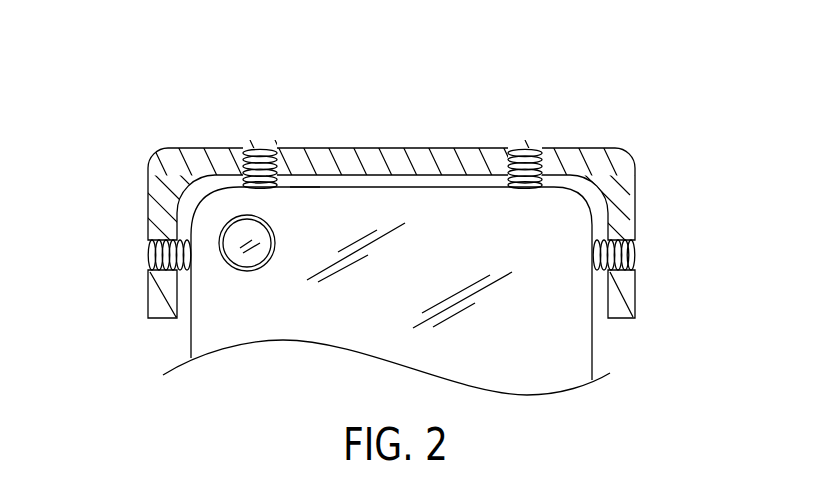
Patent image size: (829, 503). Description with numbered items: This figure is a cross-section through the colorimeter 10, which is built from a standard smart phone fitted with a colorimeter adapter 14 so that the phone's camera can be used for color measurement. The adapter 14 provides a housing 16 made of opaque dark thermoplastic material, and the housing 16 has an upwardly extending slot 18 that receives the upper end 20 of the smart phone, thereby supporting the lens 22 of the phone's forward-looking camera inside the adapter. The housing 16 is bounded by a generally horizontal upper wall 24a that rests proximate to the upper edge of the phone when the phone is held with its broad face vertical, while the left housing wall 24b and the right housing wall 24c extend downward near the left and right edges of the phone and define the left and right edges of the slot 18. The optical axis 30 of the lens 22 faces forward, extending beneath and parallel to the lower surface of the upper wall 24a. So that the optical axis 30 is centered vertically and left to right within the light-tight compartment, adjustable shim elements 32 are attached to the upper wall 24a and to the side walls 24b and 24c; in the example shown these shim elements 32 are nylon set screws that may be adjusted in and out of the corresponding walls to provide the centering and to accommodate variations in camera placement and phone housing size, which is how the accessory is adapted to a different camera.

The colorimeter 10 is at (620, 68).
The colorimeter adapter 14 is at (632, 138).
The housing 16 is at (635, 162).
The slot 18 is at (182, 325).
The upper end of the smart phone 20 is at (532, 232).
The lens 22 is at (300, 187).
The upper wall 24a is at (363, 148).
The left housing wall 24b is at (147, 233).
The right housing wall 24c is at (635, 227).
The optical axis 30 is at (248, 263).
The adjustable shim elements 32 is at (262, 150).